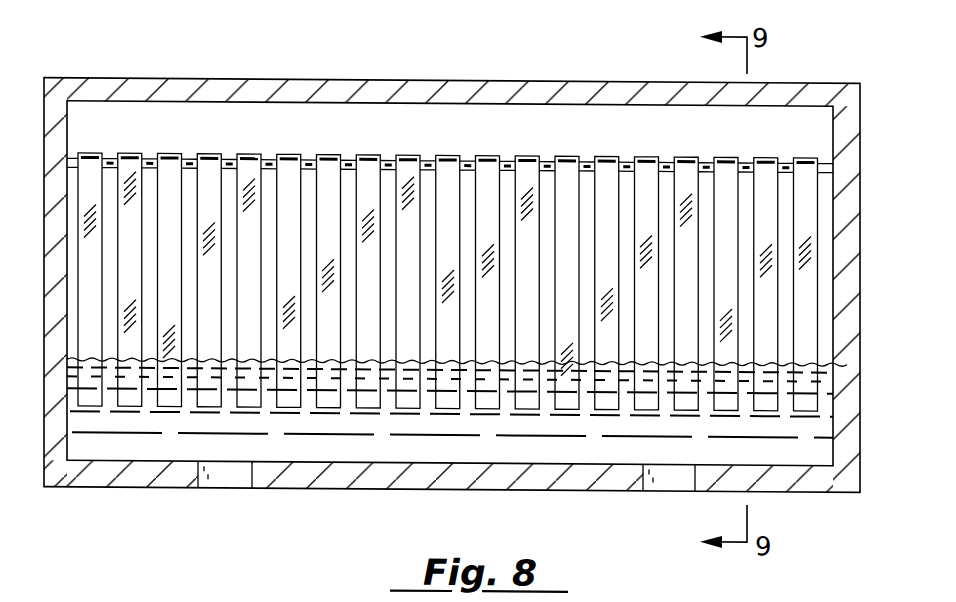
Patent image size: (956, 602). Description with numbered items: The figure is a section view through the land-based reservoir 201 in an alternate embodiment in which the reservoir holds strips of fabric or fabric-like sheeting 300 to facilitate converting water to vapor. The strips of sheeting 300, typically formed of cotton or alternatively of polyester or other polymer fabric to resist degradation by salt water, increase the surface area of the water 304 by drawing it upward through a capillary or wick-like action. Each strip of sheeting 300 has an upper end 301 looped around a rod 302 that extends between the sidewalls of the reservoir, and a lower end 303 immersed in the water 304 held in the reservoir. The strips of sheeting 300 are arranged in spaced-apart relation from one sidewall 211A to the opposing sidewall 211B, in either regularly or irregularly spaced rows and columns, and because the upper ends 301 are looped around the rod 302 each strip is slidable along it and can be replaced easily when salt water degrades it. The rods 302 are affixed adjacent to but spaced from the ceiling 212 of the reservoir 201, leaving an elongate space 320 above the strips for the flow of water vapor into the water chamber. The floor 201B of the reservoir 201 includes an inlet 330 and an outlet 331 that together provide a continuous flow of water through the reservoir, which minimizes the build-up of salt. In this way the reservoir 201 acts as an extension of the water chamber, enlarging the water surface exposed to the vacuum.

The reservoir 201 is at (276, 79).
The ceiling 212 is at (482, 79).
The sidewall 211A is at (864, 86).
The opposing sidewall 211B is at (40, 90).
The floor 201B is at (423, 490).
The elongate space 320 is at (490, 139).
The strips of sheeting 300 is at (763, 213).
The upper end 301 is at (803, 160).
The rod 302 is at (627, 158).
The lower end 303 is at (770, 412).
The water 304 is at (475, 449).
The inlet 330 is at (225, 482).
The outlet 331 is at (670, 487).